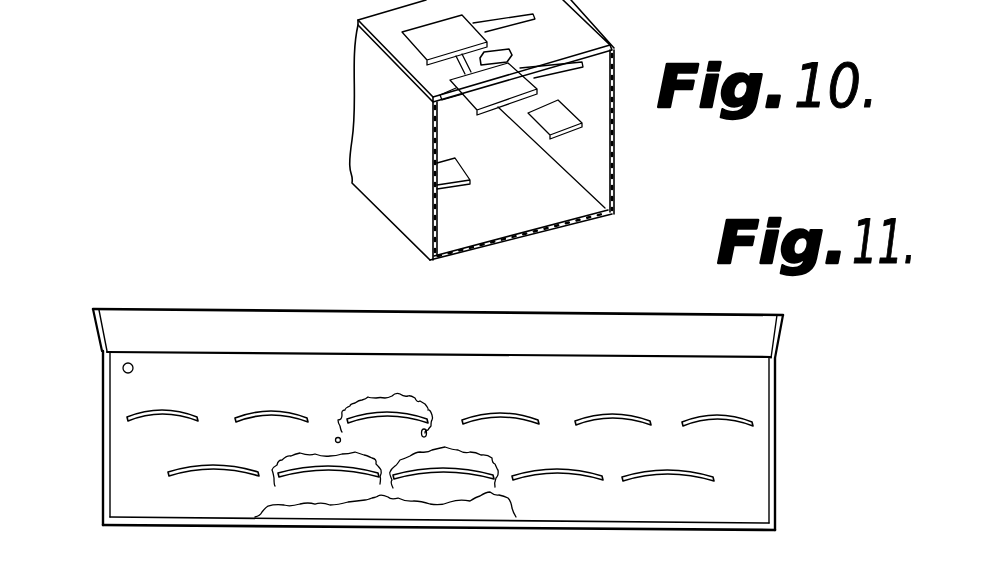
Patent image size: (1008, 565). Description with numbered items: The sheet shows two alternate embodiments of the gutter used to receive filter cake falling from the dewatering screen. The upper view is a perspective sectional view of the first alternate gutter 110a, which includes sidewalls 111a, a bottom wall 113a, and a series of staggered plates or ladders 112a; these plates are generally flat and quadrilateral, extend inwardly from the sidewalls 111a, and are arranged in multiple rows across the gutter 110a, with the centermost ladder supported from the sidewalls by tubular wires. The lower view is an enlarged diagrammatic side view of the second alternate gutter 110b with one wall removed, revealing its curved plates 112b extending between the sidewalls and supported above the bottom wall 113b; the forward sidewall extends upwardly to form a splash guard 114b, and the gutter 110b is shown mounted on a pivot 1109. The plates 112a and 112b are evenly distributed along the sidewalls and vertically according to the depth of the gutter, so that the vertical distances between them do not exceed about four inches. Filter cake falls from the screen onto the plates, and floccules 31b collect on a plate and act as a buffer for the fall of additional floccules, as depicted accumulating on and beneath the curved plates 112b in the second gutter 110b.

In FIG. 10, the gutter 110a is at (324, 102).
In FIG. 10, the gutter 110b is at (346, 256).
In FIG. 10, the sidewall 111a is at (614, 158).
In FIG. 10, the staggered plates or ladders 112a is at (423, 38).
In FIG. 10, the bottom wall 113a is at (505, 244).
In FIG. 11, the splash guard 114b is at (753, 331).
In FIG. 11, the curved plates 112b is at (690, 467).
In FIG. 11, the tray bottom 113b is at (487, 533).
In FIG. 11, the granular material 31b is at (408, 396).
In FIG. 11, the pin 1109 is at (123, 368).